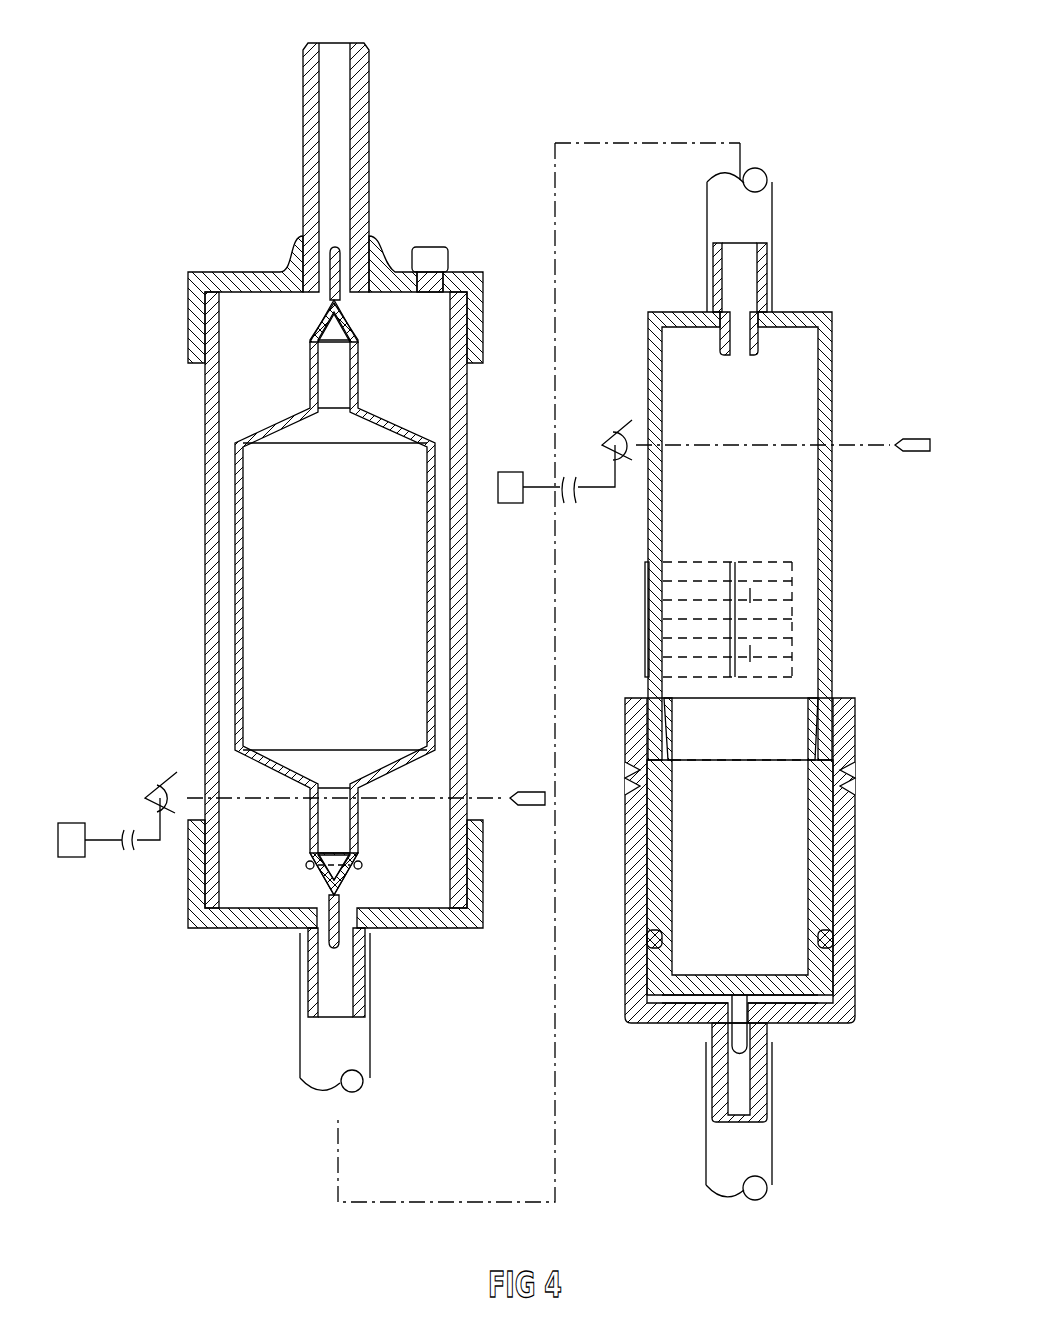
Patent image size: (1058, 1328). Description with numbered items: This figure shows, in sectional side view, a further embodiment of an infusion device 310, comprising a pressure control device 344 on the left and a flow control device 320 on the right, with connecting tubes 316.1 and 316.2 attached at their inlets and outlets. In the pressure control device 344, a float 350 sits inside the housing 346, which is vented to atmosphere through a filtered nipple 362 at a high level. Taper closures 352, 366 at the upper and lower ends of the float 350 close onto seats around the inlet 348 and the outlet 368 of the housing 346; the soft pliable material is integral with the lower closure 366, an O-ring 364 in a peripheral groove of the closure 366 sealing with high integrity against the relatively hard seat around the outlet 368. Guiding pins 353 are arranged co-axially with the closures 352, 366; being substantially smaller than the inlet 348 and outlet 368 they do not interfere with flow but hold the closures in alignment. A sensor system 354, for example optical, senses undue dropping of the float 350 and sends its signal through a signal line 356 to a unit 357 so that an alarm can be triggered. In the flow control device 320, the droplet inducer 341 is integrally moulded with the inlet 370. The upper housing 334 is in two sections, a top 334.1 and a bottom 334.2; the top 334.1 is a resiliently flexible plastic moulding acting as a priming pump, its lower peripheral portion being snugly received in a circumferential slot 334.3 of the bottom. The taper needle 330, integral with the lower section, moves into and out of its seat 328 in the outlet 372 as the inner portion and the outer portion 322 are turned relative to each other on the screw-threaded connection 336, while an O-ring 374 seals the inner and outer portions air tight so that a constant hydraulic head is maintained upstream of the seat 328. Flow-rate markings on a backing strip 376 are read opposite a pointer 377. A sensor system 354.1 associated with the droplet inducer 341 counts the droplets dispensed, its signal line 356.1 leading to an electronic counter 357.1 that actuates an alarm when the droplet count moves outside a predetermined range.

The infusion device 310 is at (710, 80).
The connecting line 316.1 is at (317, 1043).
The connecting line 316.2 is at (723, 1152).
The flow control device 320 is at (784, 667).
The outer portion 322 is at (845, 893).
The seat 328 is at (726, 1018).
The taper needle 330 is at (742, 1043).
The upper housing 334 is at (795, 653).
The top 334.1 is at (833, 433).
The bottom 334.2 is at (813, 863).
The circumferential slot 334.3 is at (836, 719).
The screw threaded connection 336 is at (864, 776).
The droplet inducer 341 is at (757, 340).
The pressure control device 344 is at (170, 396).
The housing 346 is at (208, 597).
The inlet 348 is at (305, 132).
The float 350 is at (244, 563).
The taper closure 352 is at (311, 322).
The guiding pins 353 is at (333, 263).
The sensor system 354 is at (162, 780).
The sensor system 354.1 is at (623, 428).
The signal line 356 is at (142, 843).
The signal line 356.1 is at (598, 488).
The evaluation unit 357 is at (72, 858).
The electronic counter 357.1 is at (513, 503).
The filtered nipple 362 is at (430, 257).
The O-ring 364 is at (361, 867).
The taper closure 366 is at (320, 878).
The outlet 368 is at (358, 980).
The inlet 370 is at (713, 277).
The outlet 372 is at (760, 1068).
The O-ring 374 is at (835, 938).
The backing strip 376 is at (774, 613).
The pointer 377 is at (735, 583).